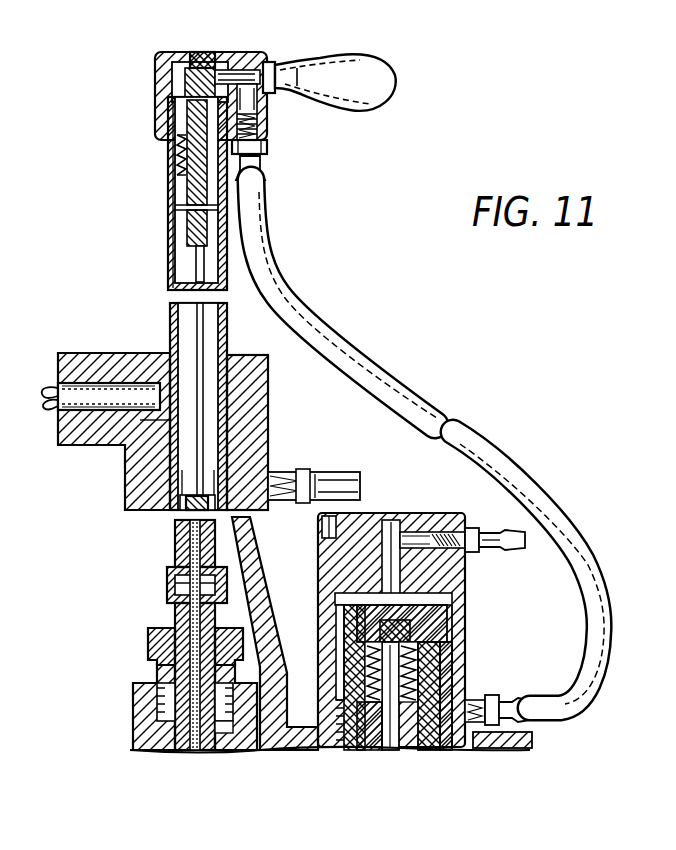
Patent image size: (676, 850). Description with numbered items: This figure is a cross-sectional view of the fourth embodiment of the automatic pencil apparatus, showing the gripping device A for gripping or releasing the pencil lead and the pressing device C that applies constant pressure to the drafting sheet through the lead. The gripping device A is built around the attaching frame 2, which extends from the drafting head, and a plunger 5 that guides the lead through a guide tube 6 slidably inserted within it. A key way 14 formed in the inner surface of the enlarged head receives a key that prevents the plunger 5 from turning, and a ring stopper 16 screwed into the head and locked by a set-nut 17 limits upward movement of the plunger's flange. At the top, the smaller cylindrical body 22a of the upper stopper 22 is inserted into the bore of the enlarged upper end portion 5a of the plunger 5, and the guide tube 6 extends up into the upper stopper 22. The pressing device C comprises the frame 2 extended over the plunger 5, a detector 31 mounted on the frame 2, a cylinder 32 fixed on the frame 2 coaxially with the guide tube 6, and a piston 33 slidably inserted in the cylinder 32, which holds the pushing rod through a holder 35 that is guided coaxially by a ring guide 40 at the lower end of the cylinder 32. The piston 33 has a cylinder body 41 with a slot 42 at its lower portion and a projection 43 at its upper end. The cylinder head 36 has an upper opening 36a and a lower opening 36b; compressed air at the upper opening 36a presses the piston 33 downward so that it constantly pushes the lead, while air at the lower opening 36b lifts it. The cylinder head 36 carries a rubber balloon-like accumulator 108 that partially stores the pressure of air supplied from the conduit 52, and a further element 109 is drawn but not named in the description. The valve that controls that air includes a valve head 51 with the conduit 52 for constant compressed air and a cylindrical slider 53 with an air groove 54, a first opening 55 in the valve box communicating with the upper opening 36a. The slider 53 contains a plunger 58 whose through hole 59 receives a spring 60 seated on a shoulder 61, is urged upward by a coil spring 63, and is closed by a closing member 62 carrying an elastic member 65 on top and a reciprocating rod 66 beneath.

The attaching frame 2 is at (255, 592).
The plunger 5 is at (185, 600).
The enlarged upper end portion of the plunger 5a is at (218, 588).
The guide tube 6 is at (190, 616).
The key way 14 is at (226, 735).
The ring stopper 16 is at (148, 642).
The set-nut 17 is at (135, 680).
The upper stopper 22 is at (175, 529).
The smaller cylindrical body of the upper stopper 22a is at (183, 578).
The detector 31 is at (95, 405).
The cylinder 32 is at (228, 331).
The piston 33 is at (176, 153).
The holder 35 is at (194, 238).
The cylinder head 36 is at (155, 72).
The upper opening 36a is at (260, 126).
The lower opening 36b is at (240, 483).
The ring guide 40 is at (203, 397).
The cylinder body 41 is at (175, 173).
The slot 42 is at (187, 195).
The projection 43 is at (208, 70).
The valve head 51 is at (368, 515).
The conduit 52 is at (398, 532).
The cylindrical slider 53 is at (458, 650).
The air groove 54 is at (330, 622).
The first opening 55 is at (478, 700).
The plunger 58 is at (452, 660).
The through hole 59 is at (366, 745).
The spring 60 is at (460, 630).
The shoulder 61 is at (340, 650).
The closing member 62 is at (463, 590).
The coil spring 63 is at (448, 745).
The elastic member 65 is at (404, 600).
The reciprocating rod 66 is at (395, 745).
The accumulator 108 is at (370, 58).
The hose 109 is at (548, 475).
The gripping device A is at (131, 672).
The pressing device C is at (164, 237).